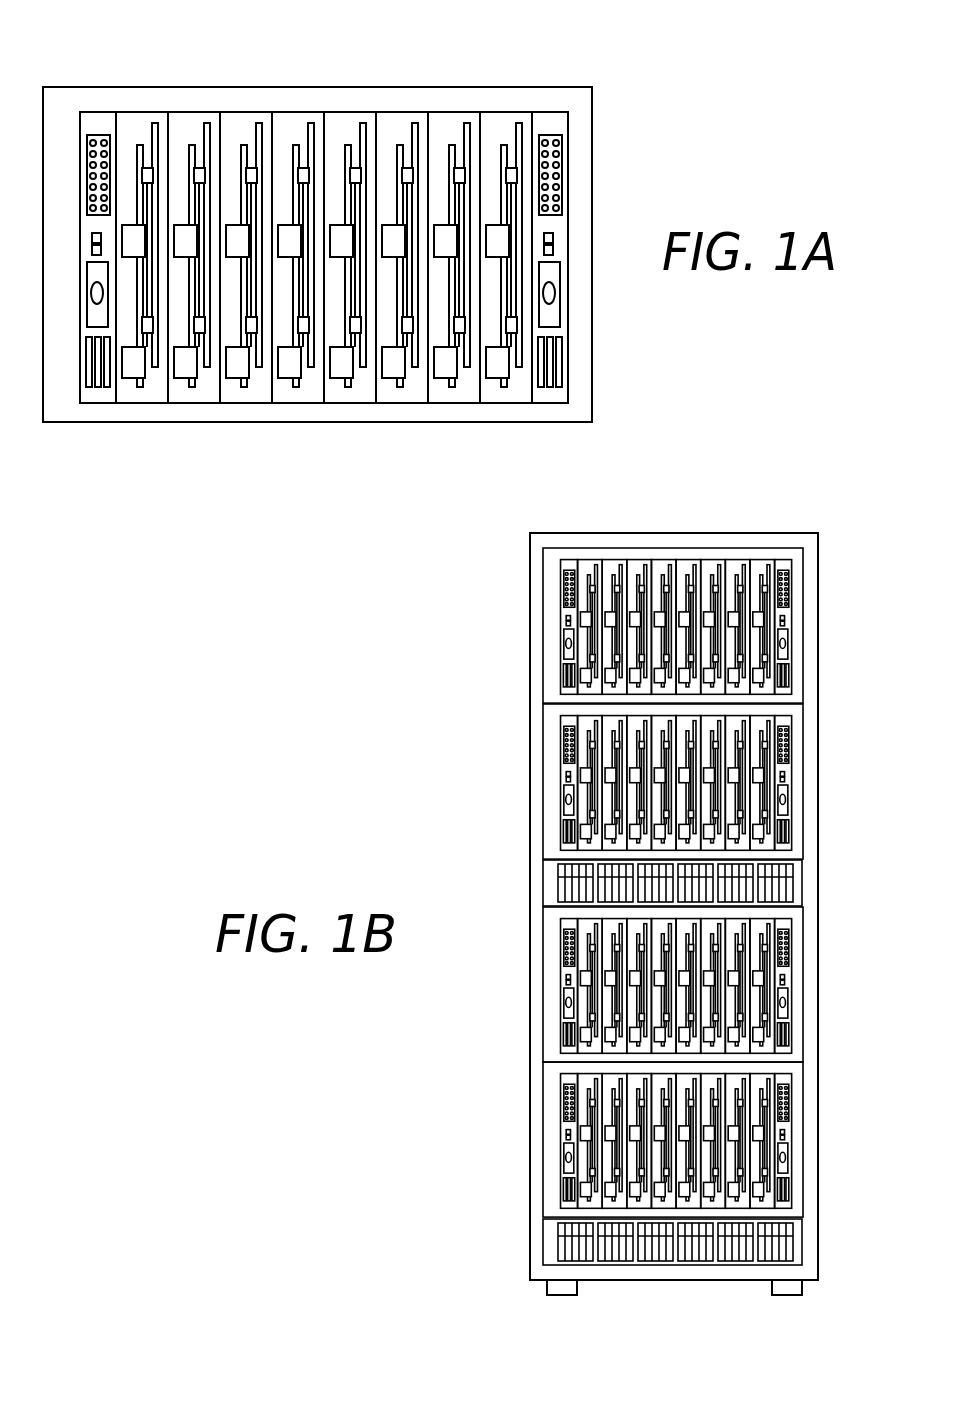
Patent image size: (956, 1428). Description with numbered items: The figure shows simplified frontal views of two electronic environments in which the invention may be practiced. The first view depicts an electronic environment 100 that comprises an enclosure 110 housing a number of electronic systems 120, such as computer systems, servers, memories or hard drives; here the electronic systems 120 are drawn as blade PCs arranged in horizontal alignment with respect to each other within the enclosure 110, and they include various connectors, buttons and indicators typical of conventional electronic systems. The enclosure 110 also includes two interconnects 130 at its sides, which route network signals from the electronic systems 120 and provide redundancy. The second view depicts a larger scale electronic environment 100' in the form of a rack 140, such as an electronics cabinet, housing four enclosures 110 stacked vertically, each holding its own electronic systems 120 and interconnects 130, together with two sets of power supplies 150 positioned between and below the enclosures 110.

In FIG. 1A, the electronic environment 100 is at (400, 214).
In FIG. 1B, the larger scale electronic environment 100' is at (523, 914).
In FIG. 1A, the enclosure 110 is at (592, 157).
In FIG. 1B, the enclosure 110 is at (543, 648).
In FIG. 1A, the electronic systems 120 is at (250, 110).
In FIG. 1B, the electronic systems 120 is at (565, 1020).
In FIG. 1A, the interconnects 130 is at (105, 110).
In FIG. 1B, the interconnects 130 is at (563, 1128).
In FIG. 1B, the rack 140 is at (530, 587).
In FIG. 1B, the power supplies 150 is at (543, 888).